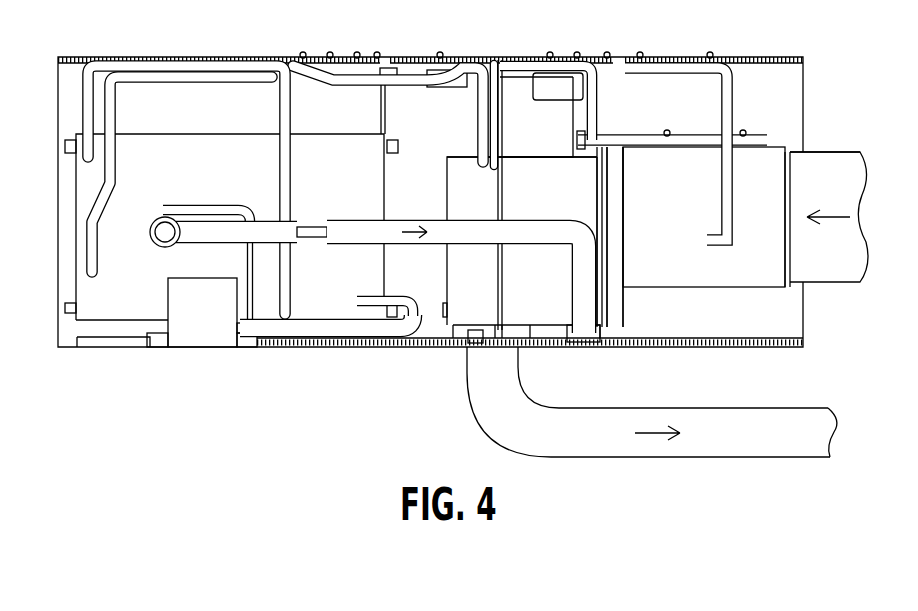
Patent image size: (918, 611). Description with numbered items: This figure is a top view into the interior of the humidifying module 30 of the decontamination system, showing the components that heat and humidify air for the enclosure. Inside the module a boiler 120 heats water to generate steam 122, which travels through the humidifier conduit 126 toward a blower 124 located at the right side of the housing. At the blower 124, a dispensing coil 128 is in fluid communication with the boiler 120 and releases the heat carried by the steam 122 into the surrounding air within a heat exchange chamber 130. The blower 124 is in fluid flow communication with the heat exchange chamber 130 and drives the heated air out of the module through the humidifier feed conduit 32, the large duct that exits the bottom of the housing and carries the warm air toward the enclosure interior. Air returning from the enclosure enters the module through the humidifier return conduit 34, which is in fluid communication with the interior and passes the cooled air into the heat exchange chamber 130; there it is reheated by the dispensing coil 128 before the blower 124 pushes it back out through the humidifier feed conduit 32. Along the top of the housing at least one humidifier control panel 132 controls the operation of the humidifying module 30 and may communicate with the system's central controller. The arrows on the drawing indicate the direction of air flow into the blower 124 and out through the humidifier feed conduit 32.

The humidifying module 30 is at (741, 14).
The humidifier feed conduit 32 is at (690, 408).
The humidifier return conduit 34 is at (827, 150).
The boiler 120 is at (227, 147).
The steam 122 is at (470, 230).
The blower 124 is at (792, 252).
The humidifier conduit 126 is at (227, 233).
The dispensing coil 128 is at (607, 190).
The heat exchange chamber 130 is at (613, 250).
The humidifier control panel 132 is at (343, 60).